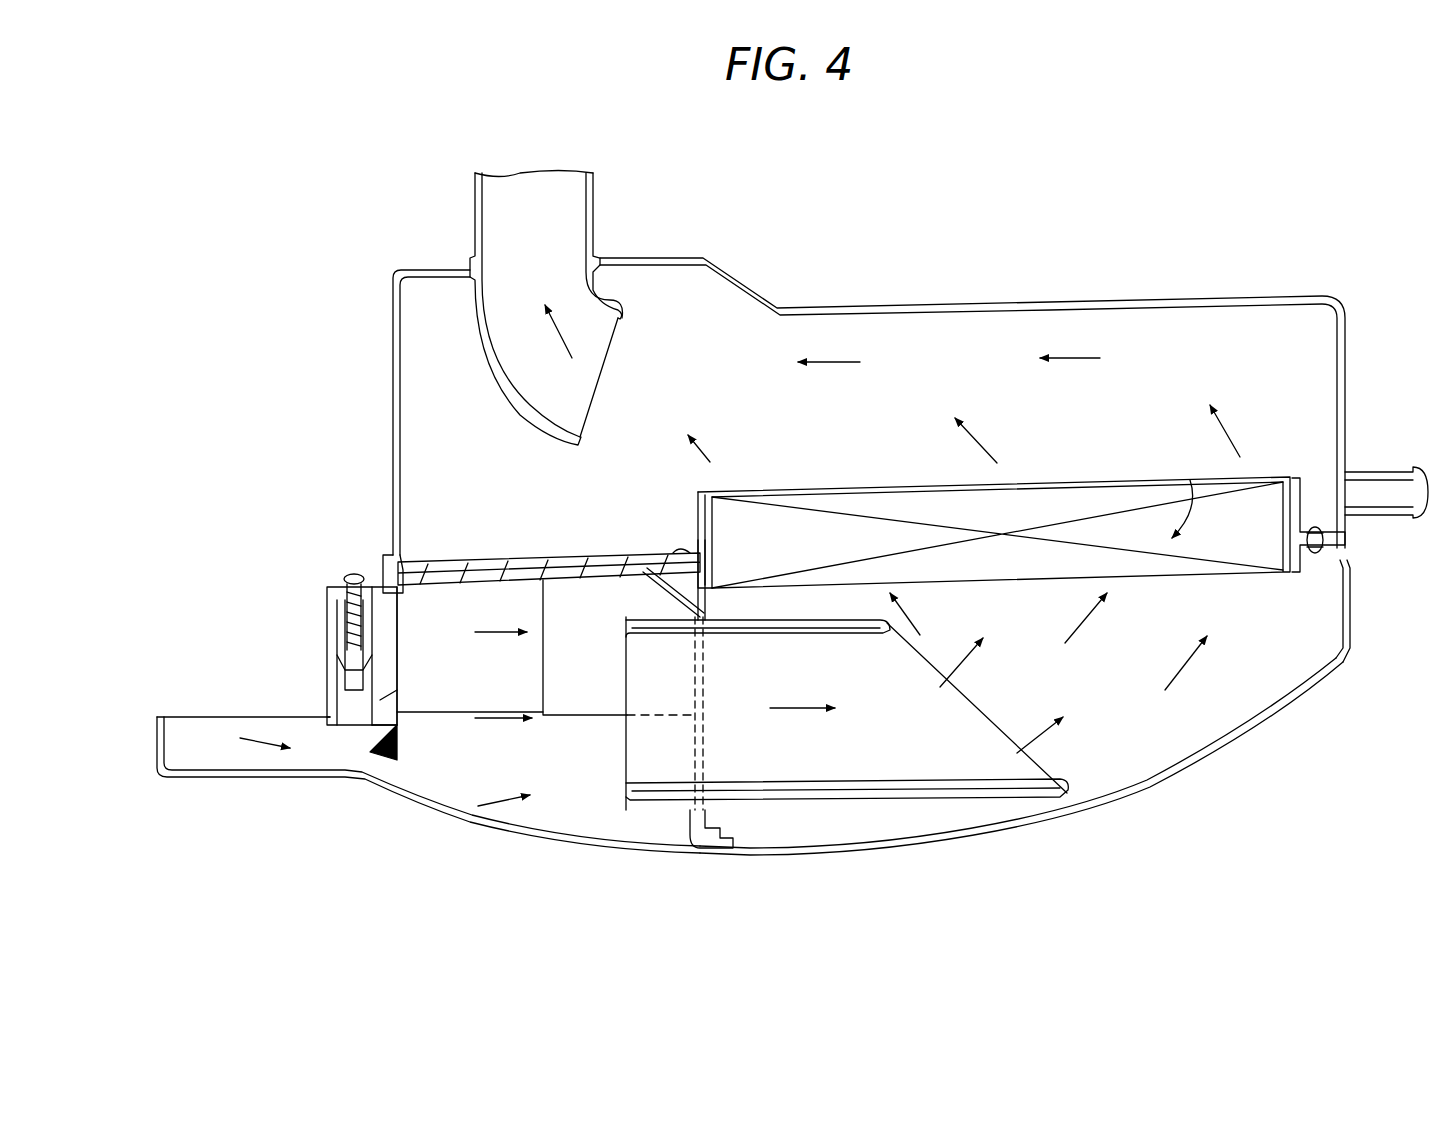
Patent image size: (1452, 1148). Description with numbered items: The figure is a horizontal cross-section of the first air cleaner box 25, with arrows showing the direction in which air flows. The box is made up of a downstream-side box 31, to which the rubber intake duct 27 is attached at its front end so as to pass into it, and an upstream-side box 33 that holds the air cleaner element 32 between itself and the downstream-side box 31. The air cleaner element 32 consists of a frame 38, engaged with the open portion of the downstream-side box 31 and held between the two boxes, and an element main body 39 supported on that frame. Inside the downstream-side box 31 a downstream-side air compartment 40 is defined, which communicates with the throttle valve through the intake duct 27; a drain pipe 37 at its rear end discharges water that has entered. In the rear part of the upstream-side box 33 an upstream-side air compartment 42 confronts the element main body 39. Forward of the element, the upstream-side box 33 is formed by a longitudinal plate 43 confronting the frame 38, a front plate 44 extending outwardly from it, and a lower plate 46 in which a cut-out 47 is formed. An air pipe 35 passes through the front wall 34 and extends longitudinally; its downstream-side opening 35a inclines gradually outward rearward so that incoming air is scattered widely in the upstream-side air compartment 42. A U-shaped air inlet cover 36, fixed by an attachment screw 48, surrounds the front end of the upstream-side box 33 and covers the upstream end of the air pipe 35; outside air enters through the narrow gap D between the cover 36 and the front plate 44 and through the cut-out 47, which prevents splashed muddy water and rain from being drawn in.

The first air cleaner box 25 is at (388, 447).
The intake duct 27 is at (472, 215).
The downstream-side box 31 is at (968, 300).
The air cleaner element 32 is at (882, 484).
The upstream-side box 33 is at (1197, 772).
The front wall 34 is at (696, 852).
The air pipe 35 is at (817, 802).
The opening 35a is at (998, 740).
The air inlet cover 36 is at (500, 838).
The drain pipe 37 is at (1383, 470).
The frame 38 is at (505, 562).
The element main body 39 is at (1100, 497).
The downstream-side air compartment 40 is at (754, 335).
The upstream-side air compartment 42 is at (1322, 627).
The longitudinal plate 43 is at (493, 560).
The front plate 44 is at (327, 676).
The lower plate 46 is at (580, 685).
The cut-out 47 is at (405, 700).
The attachment screw 48 is at (350, 573).
The gap D is at (328, 742).